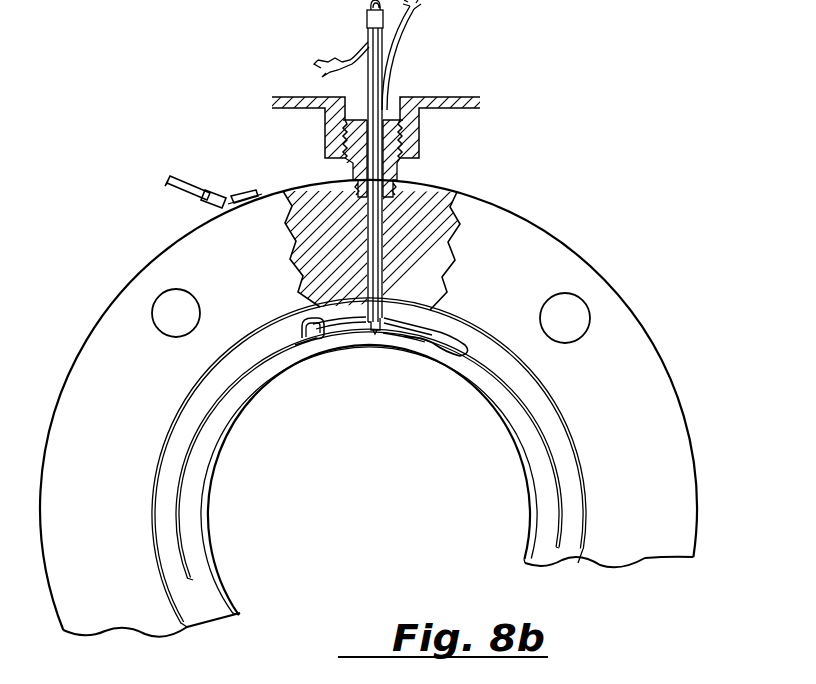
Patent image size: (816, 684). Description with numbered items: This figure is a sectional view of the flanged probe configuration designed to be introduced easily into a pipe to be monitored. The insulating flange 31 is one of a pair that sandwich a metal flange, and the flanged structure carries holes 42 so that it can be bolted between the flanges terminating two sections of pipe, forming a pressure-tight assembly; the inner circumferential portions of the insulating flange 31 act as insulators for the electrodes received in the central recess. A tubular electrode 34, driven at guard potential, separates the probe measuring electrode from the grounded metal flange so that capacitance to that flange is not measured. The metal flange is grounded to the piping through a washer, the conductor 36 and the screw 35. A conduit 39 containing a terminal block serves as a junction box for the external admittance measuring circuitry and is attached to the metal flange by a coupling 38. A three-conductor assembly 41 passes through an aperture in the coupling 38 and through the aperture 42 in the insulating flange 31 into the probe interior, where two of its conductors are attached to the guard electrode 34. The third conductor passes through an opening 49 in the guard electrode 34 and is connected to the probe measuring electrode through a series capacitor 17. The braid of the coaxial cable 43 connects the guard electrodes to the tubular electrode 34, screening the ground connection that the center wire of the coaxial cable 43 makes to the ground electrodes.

The series capacitor 17 is at (447, 350).
The insulating flange 31 is at (512, 212).
The tubular electrode 34 is at (221, 393).
The screw 35 is at (251, 193).
The conductor 36 is at (178, 190).
The coupling 38 is at (350, 160).
The conduit 39 is at (640, 398).
The 3-conductor assembly 41 is at (387, 60).
The hole 42 is at (152, 305).
The coaxial cable 43 is at (312, 343).
The opening 49 is at (322, 303).